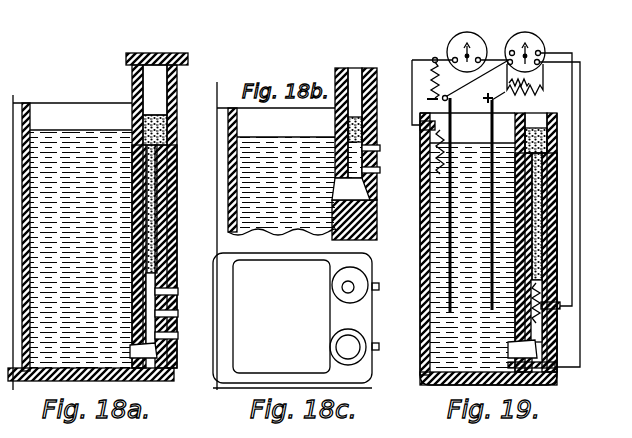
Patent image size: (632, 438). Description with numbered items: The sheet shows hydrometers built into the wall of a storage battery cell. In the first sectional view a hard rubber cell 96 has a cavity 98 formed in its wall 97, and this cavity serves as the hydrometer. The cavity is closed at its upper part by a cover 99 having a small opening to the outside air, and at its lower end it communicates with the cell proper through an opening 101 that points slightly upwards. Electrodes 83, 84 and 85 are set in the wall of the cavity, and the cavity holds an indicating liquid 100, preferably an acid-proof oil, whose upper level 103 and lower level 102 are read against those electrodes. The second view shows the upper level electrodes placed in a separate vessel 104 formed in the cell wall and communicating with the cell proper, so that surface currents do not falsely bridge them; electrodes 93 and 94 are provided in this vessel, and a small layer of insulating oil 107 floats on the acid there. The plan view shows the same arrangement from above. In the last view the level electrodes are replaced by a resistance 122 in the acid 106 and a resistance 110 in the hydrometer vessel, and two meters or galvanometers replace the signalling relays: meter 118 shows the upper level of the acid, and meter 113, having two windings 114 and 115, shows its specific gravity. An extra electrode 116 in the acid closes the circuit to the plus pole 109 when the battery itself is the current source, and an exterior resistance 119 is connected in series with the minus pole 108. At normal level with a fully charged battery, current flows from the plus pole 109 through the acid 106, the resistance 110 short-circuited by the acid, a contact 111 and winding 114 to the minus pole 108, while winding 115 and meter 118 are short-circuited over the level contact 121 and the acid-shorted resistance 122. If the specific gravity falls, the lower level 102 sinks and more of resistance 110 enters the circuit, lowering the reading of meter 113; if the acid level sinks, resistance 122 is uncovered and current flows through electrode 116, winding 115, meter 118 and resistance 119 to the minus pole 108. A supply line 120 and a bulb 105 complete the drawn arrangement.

In FIG. 18A, the electrode 83 is at (182, 292).
In FIG. 18C, the electrode 83 is at (381, 347).
In FIG. 18A, the electrode 84 is at (182, 314).
In FIG. 18A, the electrode 85 is at (182, 337).
In FIG. 18B, the electrode 93 is at (382, 146).
In FIG. 18C, the electrode 93 is at (381, 287).
In FIG. 18B, the electrode 94 is at (382, 169).
In FIG. 18A, the hard rubber cell 96 is at (170, 358).
In FIG. 19, the hard rubber cell 96 is at (427, 233).
In FIG. 18A, the wall 97 is at (132, 193).
In FIG. 18C, the wall 97 is at (330, 308).
In FIG. 19, the wall 97 is at (516, 224).
In FIG. 18A, the cavity 98 is at (157, 72).
In FIG. 18C, the cavity 98 is at (342, 344).
In FIG. 18A, the cover 99 is at (160, 55).
In FIG. 18A, the indicating liquid 100 is at (172, 195).
In FIG. 19, the indicating liquid 100 is at (552, 198).
In FIG. 18A, the opening 101 is at (132, 355).
In FIG. 19, the opening 101 is at (510, 347).
In FIG. 18A, the lower level 102 is at (170, 263).
In FIG. 19, the lower level 102 is at (548, 282).
In FIG. 18A, the upper level 103 is at (152, 118).
In FIG. 19, the upper level 103 is at (537, 127).
In FIG. 18B, the vessel 104 is at (353, 77).
In FIG. 18C, the vessel 104 is at (343, 284).
In FIG. 18B, the bulb 105 is at (338, 183).
In FIG. 18A, the acid 106 is at (58, 131).
In FIG. 18B, the acid 106 is at (248, 137).
In FIG. 19, the acid 106 is at (482, 134).
In FIG. 18B, the insulating oil 107 is at (362, 120).
In FIG. 19, the minus pole 108 is at (450, 246).
In FIG. 19, the plus pole 109 is at (492, 272).
In FIG. 19, the resistance 110 is at (518, 325).
In FIG. 19, the contact 111 is at (558, 310).
In FIG. 19, the meter 113 is at (540, 34).
In FIG. 19, the winding 114 is at (543, 92).
In FIG. 19, the winding 115 is at (508, 83).
In FIG. 19, the extra electrode 116 is at (560, 362).
In FIG. 19, the meter 118 is at (475, 33).
In FIG. 19, the exterior resistance 119 is at (440, 72).
In FIG. 19, the supply line 120 is at (411, 57).
In FIG. 19, the level contact 121 is at (435, 125).
In FIG. 19, the resistance 122 is at (443, 168).